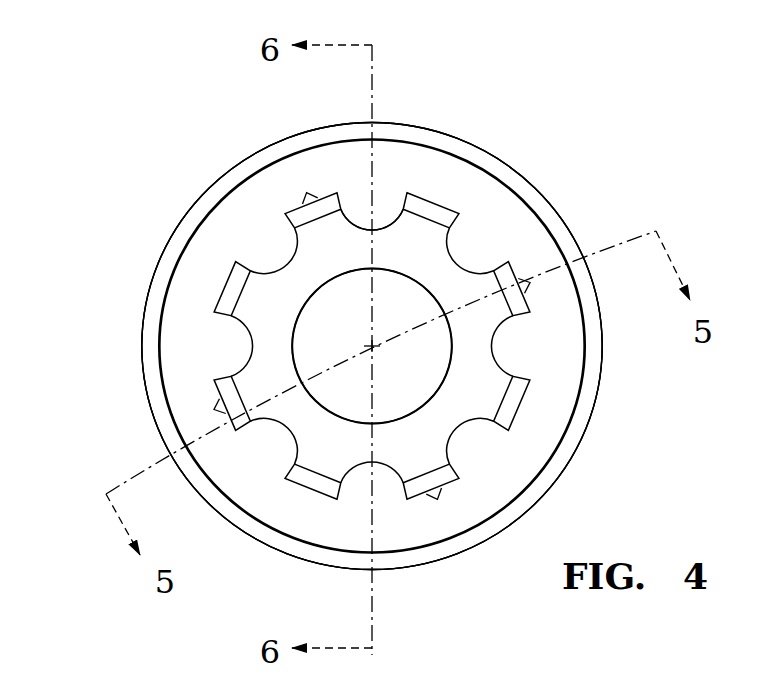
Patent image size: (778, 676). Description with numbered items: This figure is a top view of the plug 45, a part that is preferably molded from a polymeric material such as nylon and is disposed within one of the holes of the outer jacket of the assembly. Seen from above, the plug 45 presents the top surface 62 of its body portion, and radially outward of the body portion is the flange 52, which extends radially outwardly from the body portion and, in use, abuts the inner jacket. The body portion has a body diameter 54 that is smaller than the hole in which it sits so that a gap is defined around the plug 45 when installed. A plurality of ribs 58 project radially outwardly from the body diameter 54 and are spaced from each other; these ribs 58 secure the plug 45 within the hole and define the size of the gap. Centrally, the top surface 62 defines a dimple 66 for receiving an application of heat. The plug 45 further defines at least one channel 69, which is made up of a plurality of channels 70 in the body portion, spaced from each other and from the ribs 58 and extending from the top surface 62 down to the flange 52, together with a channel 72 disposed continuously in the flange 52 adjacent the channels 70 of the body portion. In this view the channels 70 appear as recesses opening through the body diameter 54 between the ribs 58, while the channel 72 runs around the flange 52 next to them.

The plug 45 is at (513, 132).
The channel 69 is at (168, 208).
The flange 52 is at (450, 547).
The dimple 66 is at (389, 292).
The channel 72 is at (540, 430).
The body diameter 54 is at (453, 202).
The channels 70 is at (460, 260).
The top surface 62 is at (343, 233).
The ribs 58 is at (310, 197).